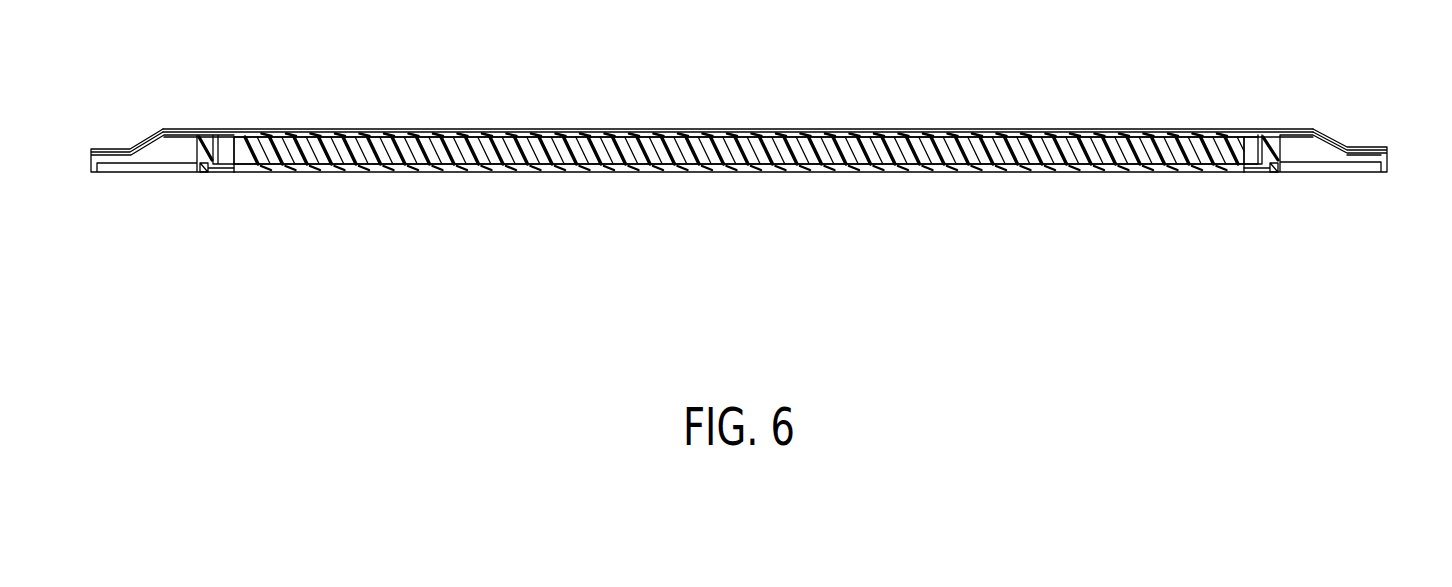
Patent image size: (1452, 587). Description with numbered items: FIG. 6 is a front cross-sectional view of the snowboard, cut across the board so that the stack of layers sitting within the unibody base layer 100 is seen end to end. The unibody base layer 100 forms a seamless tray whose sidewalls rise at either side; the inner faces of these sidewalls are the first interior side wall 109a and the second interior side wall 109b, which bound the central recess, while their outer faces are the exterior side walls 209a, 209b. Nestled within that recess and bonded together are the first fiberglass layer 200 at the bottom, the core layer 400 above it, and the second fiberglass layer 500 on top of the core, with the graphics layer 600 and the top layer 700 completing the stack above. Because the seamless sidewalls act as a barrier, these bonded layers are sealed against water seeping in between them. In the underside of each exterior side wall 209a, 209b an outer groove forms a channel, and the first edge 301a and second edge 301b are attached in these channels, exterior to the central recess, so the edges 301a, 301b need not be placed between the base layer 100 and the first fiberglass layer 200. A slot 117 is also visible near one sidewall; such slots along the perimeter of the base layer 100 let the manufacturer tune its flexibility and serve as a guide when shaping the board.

The unibody base layer 100 is at (672, 168).
The first fiberglass layer 200 is at (435, 168).
The core layer 400 is at (333, 153).
The second fiberglass layer 500 is at (783, 143).
The graphics layer 600 is at (1052, 131).
The top layer 700 is at (822, 131).
The first interior side wall 109a is at (235, 147).
The second interior side wall 109b is at (1245, 142).
The slot 117 is at (1253, 143).
The exterior side wall 209a is at (200, 155).
The exterior side wall 209b is at (1280, 152).
The first edge 301a is at (203, 173).
The second edge 301b is at (1277, 170).